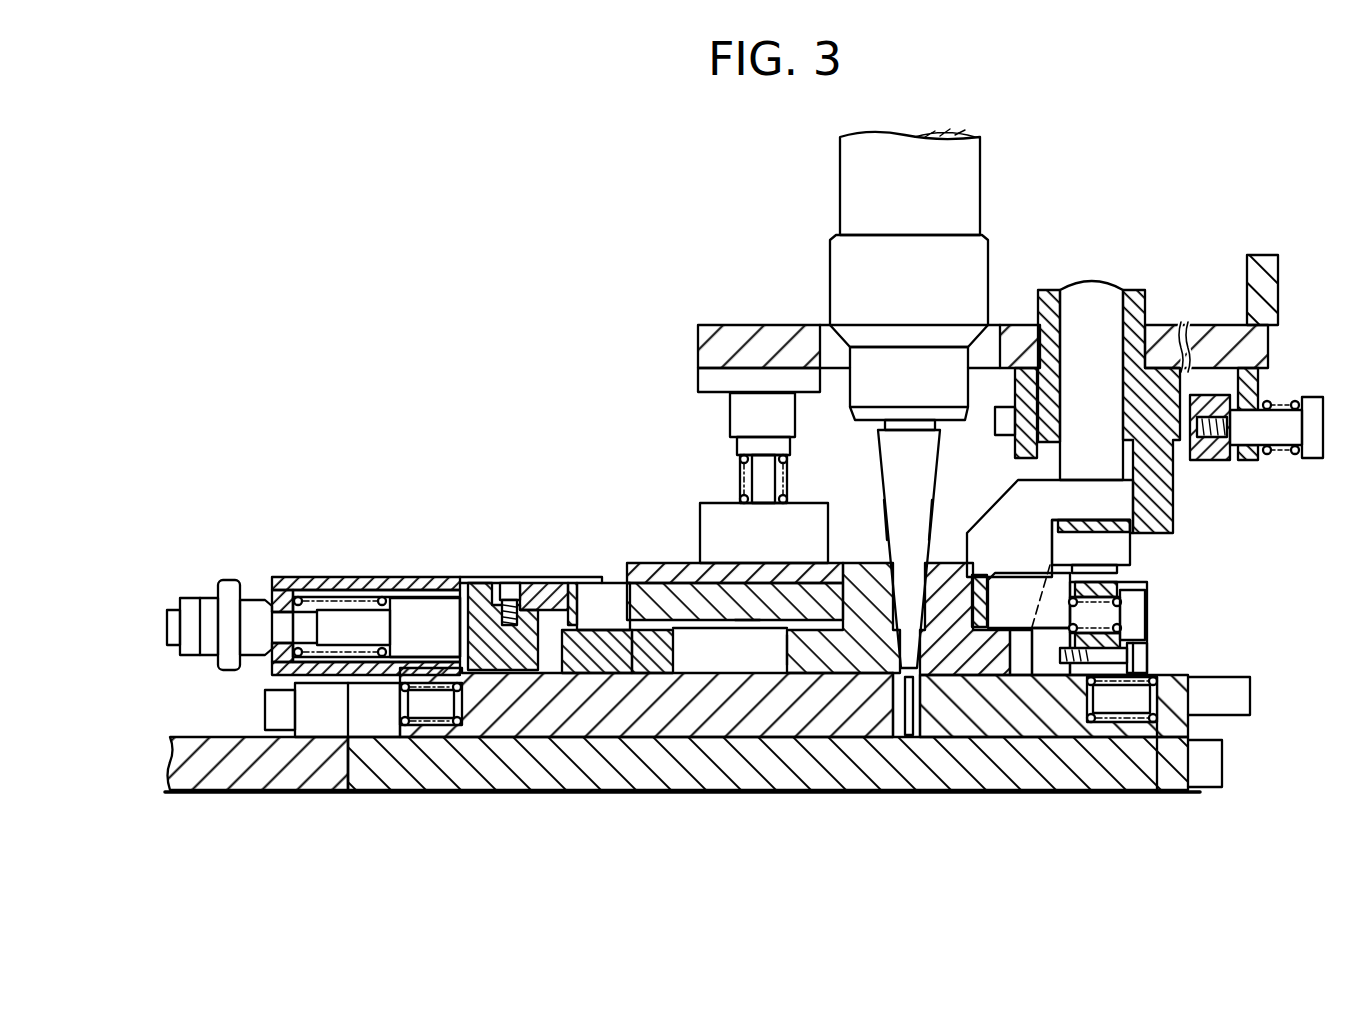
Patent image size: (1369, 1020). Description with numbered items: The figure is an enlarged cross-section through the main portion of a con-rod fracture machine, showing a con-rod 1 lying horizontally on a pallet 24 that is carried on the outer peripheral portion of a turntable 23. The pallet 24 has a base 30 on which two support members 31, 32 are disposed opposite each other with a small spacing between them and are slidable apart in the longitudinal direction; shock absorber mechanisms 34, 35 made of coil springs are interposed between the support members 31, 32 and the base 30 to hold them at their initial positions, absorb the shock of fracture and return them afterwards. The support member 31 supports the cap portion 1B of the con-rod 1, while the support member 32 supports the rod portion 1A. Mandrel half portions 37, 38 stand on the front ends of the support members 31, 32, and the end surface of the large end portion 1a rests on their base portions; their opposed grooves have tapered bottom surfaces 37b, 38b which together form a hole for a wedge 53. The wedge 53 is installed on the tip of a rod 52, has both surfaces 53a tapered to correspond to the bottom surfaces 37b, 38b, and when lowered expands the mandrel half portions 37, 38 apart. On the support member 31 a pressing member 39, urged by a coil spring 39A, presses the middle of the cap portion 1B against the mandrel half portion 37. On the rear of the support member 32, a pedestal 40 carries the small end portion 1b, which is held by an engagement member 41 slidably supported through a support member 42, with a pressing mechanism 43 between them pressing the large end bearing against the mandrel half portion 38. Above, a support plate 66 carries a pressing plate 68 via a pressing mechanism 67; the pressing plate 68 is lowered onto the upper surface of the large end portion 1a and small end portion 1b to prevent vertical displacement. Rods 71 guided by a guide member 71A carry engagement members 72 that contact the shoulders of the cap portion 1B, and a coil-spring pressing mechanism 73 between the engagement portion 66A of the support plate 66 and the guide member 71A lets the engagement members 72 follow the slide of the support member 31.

The con-rod 1 is at (707, 626).
The large end portion 1a is at (815, 640).
The small end portion 1b is at (634, 634).
The rod portion 1A is at (747, 607).
The cap portion 1B is at (995, 640).
The turntable 23 is at (233, 775).
The pallet 24 is at (307, 572).
The base 30 is at (480, 773).
The support member 31 is at (1048, 722).
The support member 32 is at (530, 715).
The shock absorber mechanism 34 is at (1120, 722).
The shock absorber mechanism 35 is at (413, 690).
The mandrel half portion 37 is at (955, 605).
The bottom surface 37b is at (912, 690).
The mandrel half portion 38 is at (868, 600).
The bottom surface 38b is at (893, 640).
The pressing member 39 is at (1056, 586).
The coil spring 39A is at (1112, 604).
The pedestal 40 is at (588, 627).
The engagement member 41 is at (540, 592).
The support member 42 is at (423, 586).
The pressing mechanism 43 is at (360, 607).
The rod 52 is at (858, 172).
The wedge 53 is at (892, 452).
The surface 53a is at (883, 500).
The support plate 66 is at (737, 333).
The proximal end side engagement portion 66A is at (1228, 395).
The pressing mechanism 67 is at (730, 470).
The pressing plate 68 is at (665, 565).
The rod 71 is at (1083, 290).
The guide member 71A is at (1135, 312).
The engagement member 72 is at (1018, 556).
The pressing mechanism 73 is at (1284, 384).